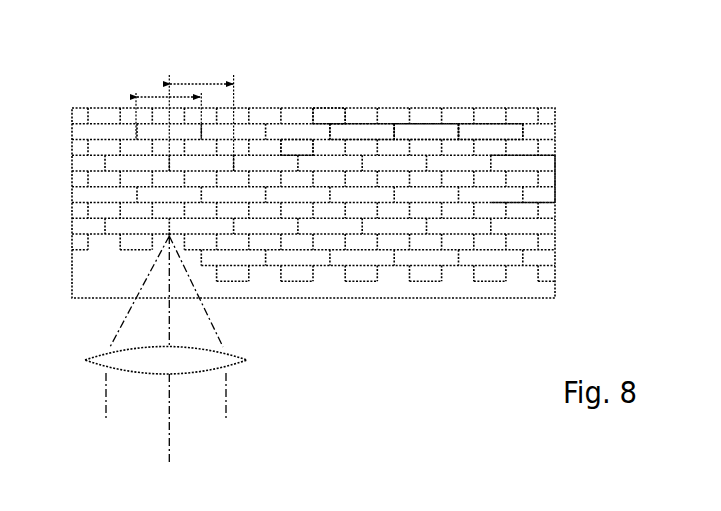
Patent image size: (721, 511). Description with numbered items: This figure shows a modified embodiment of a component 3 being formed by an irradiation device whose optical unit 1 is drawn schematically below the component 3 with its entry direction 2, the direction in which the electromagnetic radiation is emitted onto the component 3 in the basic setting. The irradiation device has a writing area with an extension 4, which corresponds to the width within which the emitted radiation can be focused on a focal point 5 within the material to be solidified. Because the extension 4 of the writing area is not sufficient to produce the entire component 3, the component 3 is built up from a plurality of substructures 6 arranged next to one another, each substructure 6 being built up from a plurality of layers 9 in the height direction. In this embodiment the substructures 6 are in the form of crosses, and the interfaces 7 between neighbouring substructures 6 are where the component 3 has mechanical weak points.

The optical unit 1 is at (84, 368).
The entry direction 2 is at (166, 448).
The component 3 is at (90, 75).
The extension 4 is at (185, 117).
The focal point 5 is at (167, 236).
The substructure 6 is at (363, 128).
The interface 7 is at (460, 137).
The layer 9 is at (542, 200).